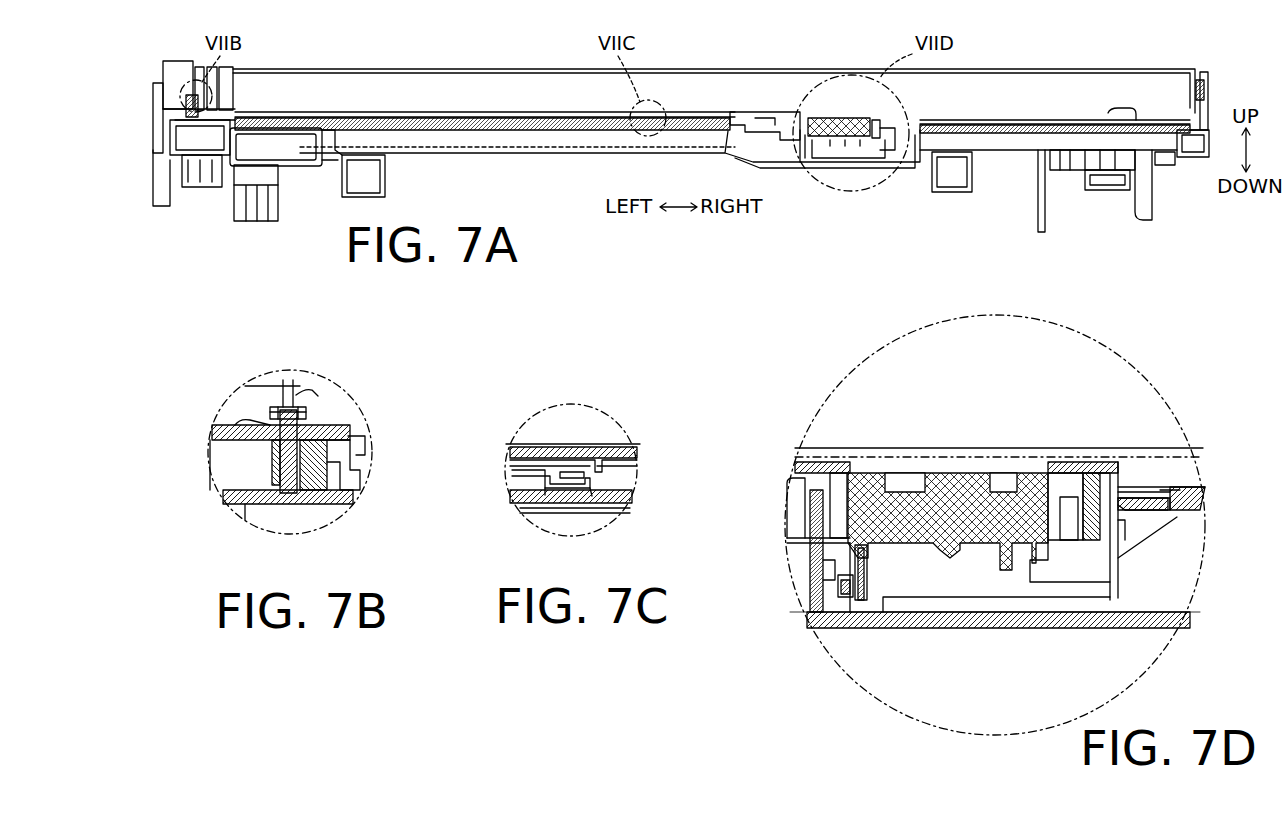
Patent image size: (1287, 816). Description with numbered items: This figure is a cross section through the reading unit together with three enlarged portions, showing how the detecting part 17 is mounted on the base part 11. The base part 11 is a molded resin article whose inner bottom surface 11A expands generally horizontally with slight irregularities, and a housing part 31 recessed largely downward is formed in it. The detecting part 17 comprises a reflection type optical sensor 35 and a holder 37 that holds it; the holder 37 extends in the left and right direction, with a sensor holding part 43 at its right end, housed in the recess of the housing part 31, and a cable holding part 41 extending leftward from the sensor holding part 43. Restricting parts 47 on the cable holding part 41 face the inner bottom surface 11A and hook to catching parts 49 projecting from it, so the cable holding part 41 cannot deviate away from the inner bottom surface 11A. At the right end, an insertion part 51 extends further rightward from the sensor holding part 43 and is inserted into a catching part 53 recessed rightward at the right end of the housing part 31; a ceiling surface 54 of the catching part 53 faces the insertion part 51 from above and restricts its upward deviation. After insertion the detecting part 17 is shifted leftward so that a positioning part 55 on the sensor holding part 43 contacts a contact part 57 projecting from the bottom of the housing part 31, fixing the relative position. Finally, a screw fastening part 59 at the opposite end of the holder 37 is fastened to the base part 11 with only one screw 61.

In FIG. 7A, the base part 11 is at (1052, 76).
In FIG. 7B, the base part 11 is at (320, 495).
In FIG. 7C, the base part 11 is at (513, 490).
In FIG. 7D, the base part 11 is at (1094, 450).
In FIG. 7A, the inner bottom surface 11A is at (977, 120).
In FIG. 7A, the detecting part 17 is at (752, 122).
In FIG. 7A, the housing part 31 is at (893, 150).
In FIG. 7D, the housing part 31 is at (1170, 585).
In FIG. 7A, the optical sensor 35 is at (833, 120).
In FIG. 7D, the optical sensor 35 is at (945, 472).
In FIG. 7A, the holder 37 is at (548, 114).
In FIG. 7B, the holder 37 is at (366, 453).
In FIG. 7C, the holder 37 is at (598, 458).
In FIG. 7D, the holder 37 is at (1030, 470).
In FIG. 7A, the cable holding part 41 is at (415, 110).
In FIG. 7C, the cable holding part 41 is at (567, 448).
In FIG. 7A, the sensor holding part 43 is at (848, 152).
In FIG. 7D, the sensor holding part 43 is at (968, 580).
In FIG. 7C, the restricting part 47 is at (578, 490).
In FIG. 7C, the catching part 49 is at (560, 468).
In FIG. 7D, the insertion part 51 is at (1152, 490).
In FIG. 7D, the catching part 53 is at (1200, 550).
In FIG. 7D, the ceiling surface 54 is at (1205, 505).
In FIG. 7D, the positioning part 55 is at (860, 614).
In FIG. 7D, the contact part 57 is at (840, 590).
In FIG. 7B, the screw fastening part 59 is at (240, 428).
In FIG. 7B, the screw 61 is at (302, 412).